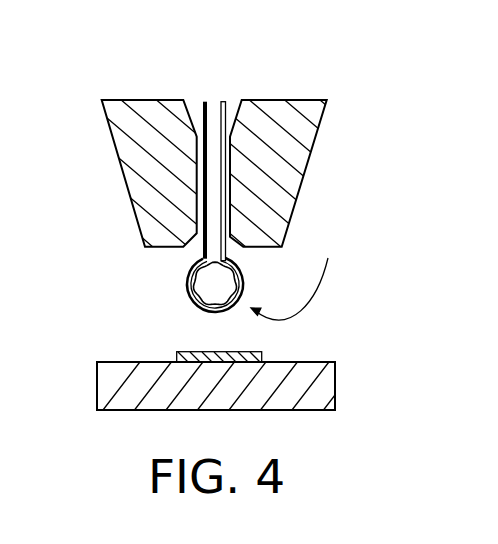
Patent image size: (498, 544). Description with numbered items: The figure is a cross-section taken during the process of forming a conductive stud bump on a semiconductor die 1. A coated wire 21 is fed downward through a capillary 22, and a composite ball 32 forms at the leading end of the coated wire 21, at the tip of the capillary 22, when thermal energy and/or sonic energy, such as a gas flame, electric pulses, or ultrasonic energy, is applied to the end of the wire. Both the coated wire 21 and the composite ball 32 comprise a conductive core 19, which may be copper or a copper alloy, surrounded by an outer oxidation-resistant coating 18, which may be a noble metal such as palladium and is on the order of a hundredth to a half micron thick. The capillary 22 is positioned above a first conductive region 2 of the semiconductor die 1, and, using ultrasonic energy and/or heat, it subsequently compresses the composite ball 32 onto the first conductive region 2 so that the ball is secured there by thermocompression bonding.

The semiconductor die 1 is at (307, 377).
The first conductive region 2 is at (178, 358).
The oxidation-resistant coating 18 is at (200, 283).
The conductive core 19 is at (247, 285).
The coated wire 21 is at (217, 110).
The capillary 22 is at (138, 215).
The composite ball 32 is at (300, 273).